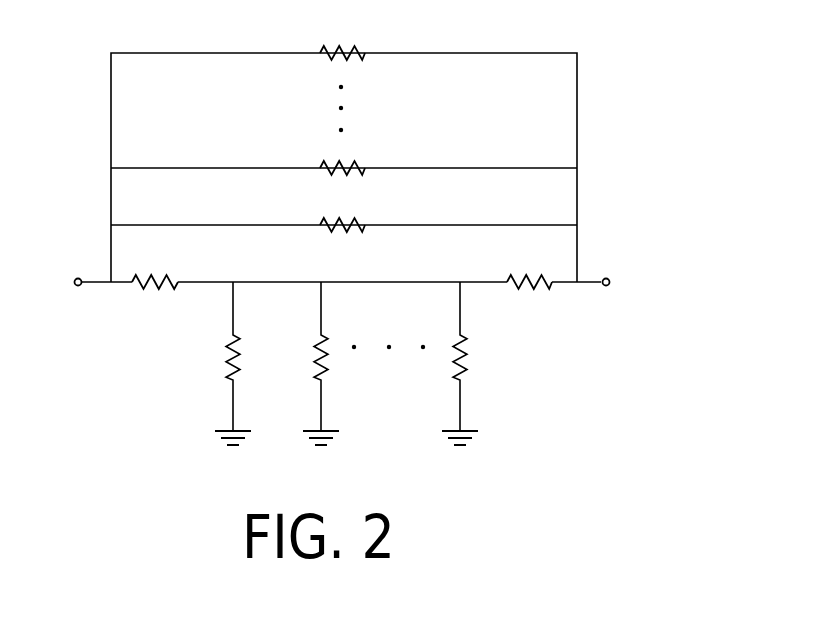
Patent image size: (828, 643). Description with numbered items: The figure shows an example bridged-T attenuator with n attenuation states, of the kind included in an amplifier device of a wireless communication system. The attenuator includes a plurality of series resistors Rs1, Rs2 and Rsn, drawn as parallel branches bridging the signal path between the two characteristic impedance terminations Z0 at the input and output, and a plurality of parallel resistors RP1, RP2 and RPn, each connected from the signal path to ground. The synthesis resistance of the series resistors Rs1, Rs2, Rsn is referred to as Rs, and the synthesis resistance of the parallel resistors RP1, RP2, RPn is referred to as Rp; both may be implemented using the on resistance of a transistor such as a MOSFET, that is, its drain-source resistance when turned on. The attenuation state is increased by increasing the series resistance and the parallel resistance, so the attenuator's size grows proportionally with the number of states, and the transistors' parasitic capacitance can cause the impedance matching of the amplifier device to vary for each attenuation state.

The series resistor Rsn is at (323, 38).
The series resistor Rs2 is at (323, 154).
The series resistor Rs1 is at (323, 211).
The characteristic impedance Z0 is at (342, 299).
The parallel resistor RP1 is at (248, 363).
The parallel resistor RP2 is at (336, 363).
The parallel resistor RPn is at (475, 363).